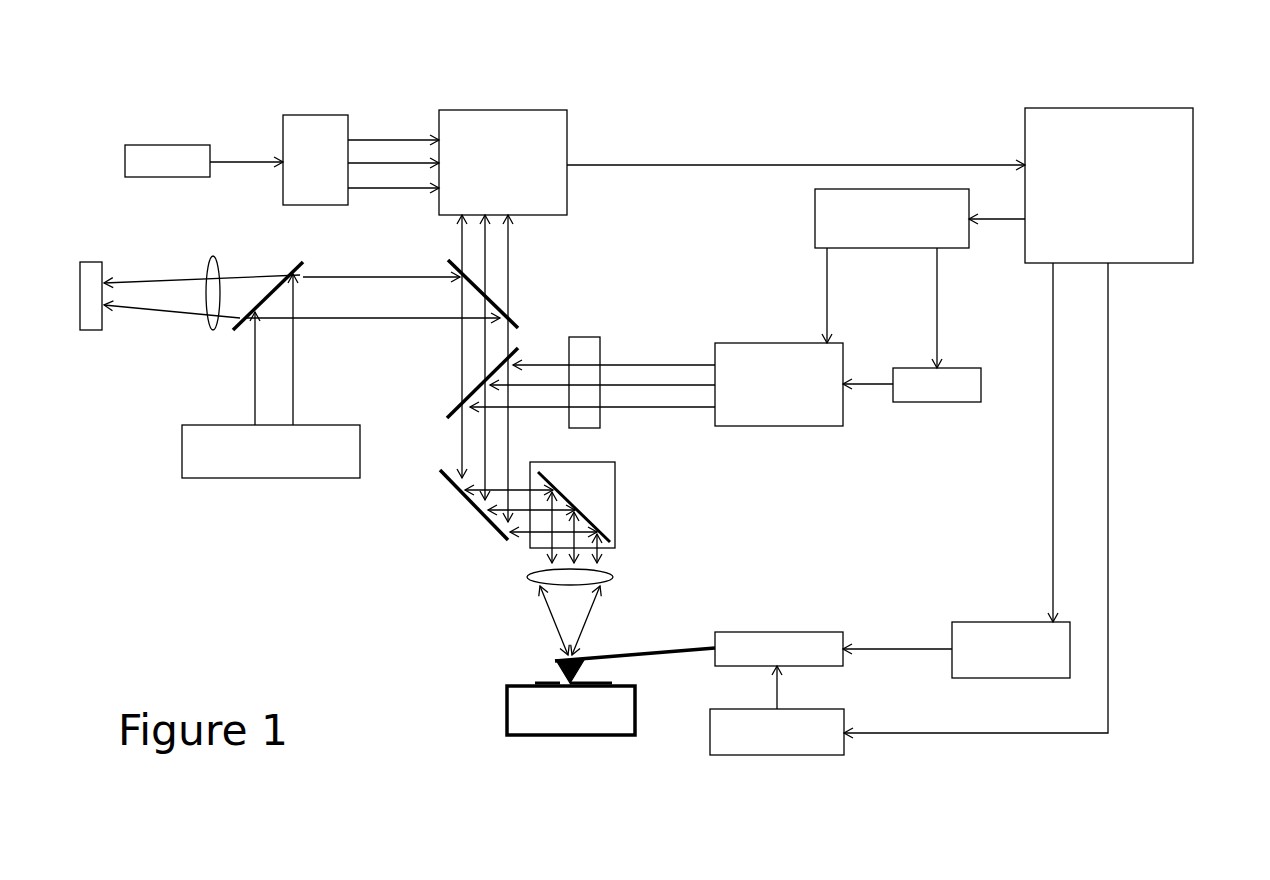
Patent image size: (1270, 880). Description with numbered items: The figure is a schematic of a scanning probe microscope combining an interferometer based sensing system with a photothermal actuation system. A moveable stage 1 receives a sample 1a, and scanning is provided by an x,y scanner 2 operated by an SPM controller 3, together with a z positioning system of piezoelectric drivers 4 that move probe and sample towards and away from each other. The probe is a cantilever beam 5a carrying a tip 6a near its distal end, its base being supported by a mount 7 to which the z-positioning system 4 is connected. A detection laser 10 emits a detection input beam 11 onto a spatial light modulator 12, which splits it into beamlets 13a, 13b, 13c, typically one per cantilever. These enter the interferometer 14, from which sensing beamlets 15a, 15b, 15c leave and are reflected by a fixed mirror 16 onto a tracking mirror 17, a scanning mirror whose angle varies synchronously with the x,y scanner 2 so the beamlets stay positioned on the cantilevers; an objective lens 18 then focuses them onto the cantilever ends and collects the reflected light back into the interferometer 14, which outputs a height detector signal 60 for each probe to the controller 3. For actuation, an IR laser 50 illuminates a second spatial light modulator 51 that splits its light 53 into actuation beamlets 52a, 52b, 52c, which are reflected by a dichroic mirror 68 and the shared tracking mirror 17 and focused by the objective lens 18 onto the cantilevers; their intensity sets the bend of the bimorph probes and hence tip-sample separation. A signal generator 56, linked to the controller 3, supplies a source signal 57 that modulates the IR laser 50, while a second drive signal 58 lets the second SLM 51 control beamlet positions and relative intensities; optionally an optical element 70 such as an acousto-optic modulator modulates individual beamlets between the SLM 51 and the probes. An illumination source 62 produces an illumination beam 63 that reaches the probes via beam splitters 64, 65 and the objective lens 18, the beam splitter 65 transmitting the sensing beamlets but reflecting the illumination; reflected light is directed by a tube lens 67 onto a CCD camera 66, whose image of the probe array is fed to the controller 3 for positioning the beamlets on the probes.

The moveable stage 1 is at (530, 715).
The sample 1a is at (600, 680).
The x,y scanner 2 is at (982, 667).
The SPM controller 3 is at (1157, 190).
The piezoelectric drivers 4 is at (725, 742).
The cantilever beam 5a is at (660, 655).
The tip 6a is at (552, 664).
The mount 7 is at (777, 646).
The detection laser 10 is at (172, 168).
The detection input beam 11 is at (240, 158).
The spatial light modulator 12 is at (313, 115).
The beamlet 13a is at (390, 138).
The beamlet 13b is at (392, 166).
The beamlet 13c is at (403, 191).
The interferometer 14 is at (518, 130).
The sensing beamlet 15a is at (457, 340).
The sensing beamlet 15b is at (487, 255).
The sensing beamlet 15c is at (510, 302).
The fixed mirror 16 is at (475, 515).
The tracking mirror 17 is at (590, 518).
The objective lens 18 is at (530, 578).
The IR laser 50 is at (950, 377).
The second spatial light modulator 51 is at (750, 340).
The actuation beamlet 52a is at (686, 410).
The actuation beamlet 52b is at (647, 383).
The actuation beamlet 52c is at (680, 363).
The light 53 is at (870, 388).
The signal generator 56 is at (812, 214).
The source signal 57 is at (942, 312).
The second drive signal 58 is at (830, 311).
The height detector signal 60 is at (720, 164).
The illumination source 62 is at (213, 455).
The illumination beam 63 is at (290, 378).
The beam splitter 64 is at (293, 262).
The beam splitter 65 is at (440, 263).
The CCD camera 66 is at (95, 323).
The tube lens 67 is at (212, 295).
The dichroic mirror 68 is at (447, 415).
The optical element 70 is at (592, 337).